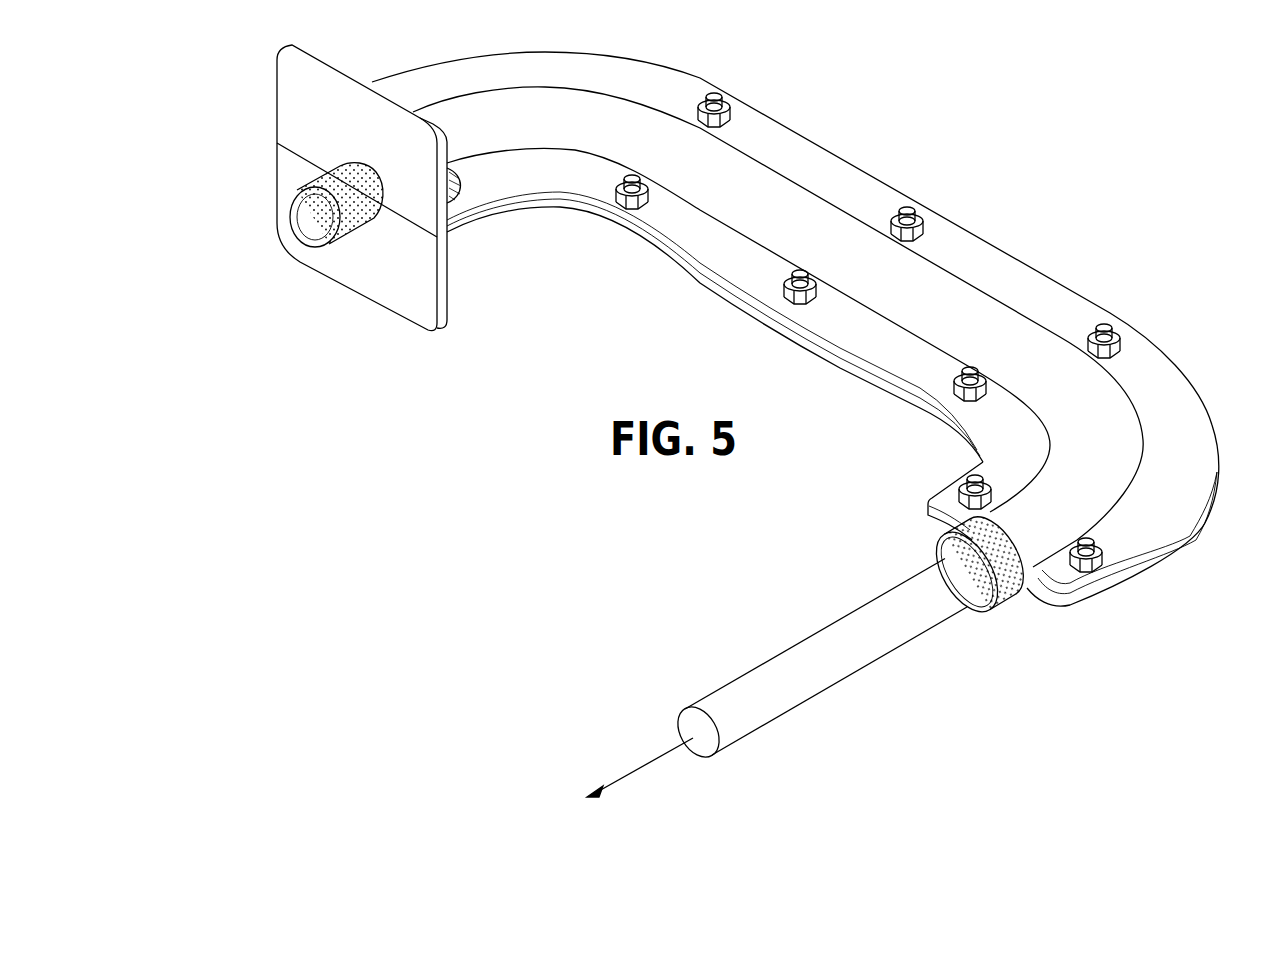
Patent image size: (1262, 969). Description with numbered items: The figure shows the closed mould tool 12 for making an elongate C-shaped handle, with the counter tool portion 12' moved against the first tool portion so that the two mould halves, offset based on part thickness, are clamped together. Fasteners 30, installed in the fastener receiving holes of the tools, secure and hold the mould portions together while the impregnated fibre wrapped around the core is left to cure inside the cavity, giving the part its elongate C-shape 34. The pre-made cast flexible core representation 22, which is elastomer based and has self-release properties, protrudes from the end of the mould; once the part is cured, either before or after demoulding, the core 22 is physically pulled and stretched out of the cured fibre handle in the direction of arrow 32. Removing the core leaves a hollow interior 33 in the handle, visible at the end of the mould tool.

The mould tool 12 is at (322, 188).
The counter tool portion 12' is at (356, 312).
The hollow interior 33 is at (302, 213).
The fasteners 30 is at (905, 220).
The elongate C-shape 34 is at (1005, 582).
The flexible core representation 22 is at (858, 667).
The arrow 32 is at (632, 773).